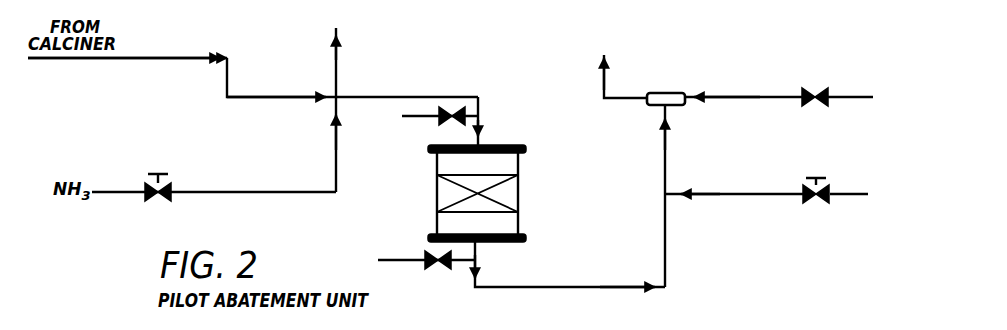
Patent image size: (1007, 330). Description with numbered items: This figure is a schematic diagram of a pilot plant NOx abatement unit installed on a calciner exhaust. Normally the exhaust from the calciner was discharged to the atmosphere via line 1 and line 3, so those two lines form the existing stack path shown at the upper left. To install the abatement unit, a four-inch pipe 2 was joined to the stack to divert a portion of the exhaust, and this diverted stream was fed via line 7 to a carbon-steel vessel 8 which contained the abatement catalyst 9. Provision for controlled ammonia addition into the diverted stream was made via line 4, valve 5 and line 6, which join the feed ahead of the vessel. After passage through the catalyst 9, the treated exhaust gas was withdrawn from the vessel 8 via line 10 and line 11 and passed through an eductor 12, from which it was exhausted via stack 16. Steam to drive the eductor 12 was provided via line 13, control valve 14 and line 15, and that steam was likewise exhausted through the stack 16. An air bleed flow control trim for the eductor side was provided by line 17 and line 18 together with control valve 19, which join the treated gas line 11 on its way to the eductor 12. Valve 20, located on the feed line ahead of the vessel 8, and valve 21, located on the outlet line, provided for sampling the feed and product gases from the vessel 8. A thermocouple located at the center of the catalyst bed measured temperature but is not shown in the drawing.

The line 1 is at (174, 43).
The 4-inch pipe 2 is at (227, 86).
The line 3 is at (338, 45).
The line 4 is at (110, 194).
The valve 5 is at (172, 185).
The line 6 is at (337, 163).
The line 7 is at (413, 80).
The carbon-steel vessel 8 is at (512, 146).
The abatement catalyst 9 is at (507, 196).
The line 10 is at (478, 258).
The line 11 is at (668, 161).
The eductor 12 is at (650, 106).
The line 13 is at (855, 100).
The control valve 14 is at (816, 108).
The line 15 is at (762, 100).
The stack 16 is at (602, 72).
The line 17 is at (858, 193).
The line 18 is at (738, 193).
The control valve 19 is at (830, 182).
The valve 20 is at (452, 106).
The valve 21 is at (438, 270).